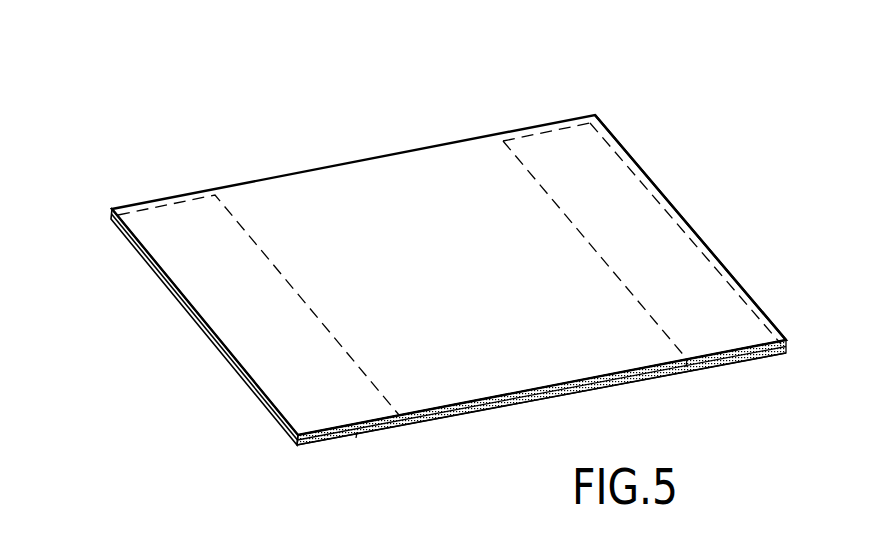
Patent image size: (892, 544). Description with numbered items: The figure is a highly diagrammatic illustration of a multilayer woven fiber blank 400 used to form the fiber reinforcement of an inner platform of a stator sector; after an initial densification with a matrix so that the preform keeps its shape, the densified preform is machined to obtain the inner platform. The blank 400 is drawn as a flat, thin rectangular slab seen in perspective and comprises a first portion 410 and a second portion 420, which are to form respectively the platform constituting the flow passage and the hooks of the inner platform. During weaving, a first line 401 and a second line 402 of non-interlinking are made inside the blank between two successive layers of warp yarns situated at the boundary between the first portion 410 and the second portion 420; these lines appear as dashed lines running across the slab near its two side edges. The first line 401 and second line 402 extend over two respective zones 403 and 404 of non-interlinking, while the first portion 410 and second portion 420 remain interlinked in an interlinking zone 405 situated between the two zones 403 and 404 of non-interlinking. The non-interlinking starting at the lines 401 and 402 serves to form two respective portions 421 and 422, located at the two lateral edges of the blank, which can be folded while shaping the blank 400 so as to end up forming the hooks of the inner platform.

The fiber blank 400 is at (318, 121).
The first line of non-interlinking 401 is at (243, 222).
The second line of non-interlinking 402 is at (537, 172).
The zone of non-interlinking 403 is at (220, 287).
The zone of non-interlinking 404 is at (605, 197).
The interlinking zone 405 is at (543, 392).
The first portion 410 is at (623, 392).
The second portion 420 is at (417, 197).
The foldable portion 421 is at (307, 388).
The foldable portion 422 is at (698, 293).